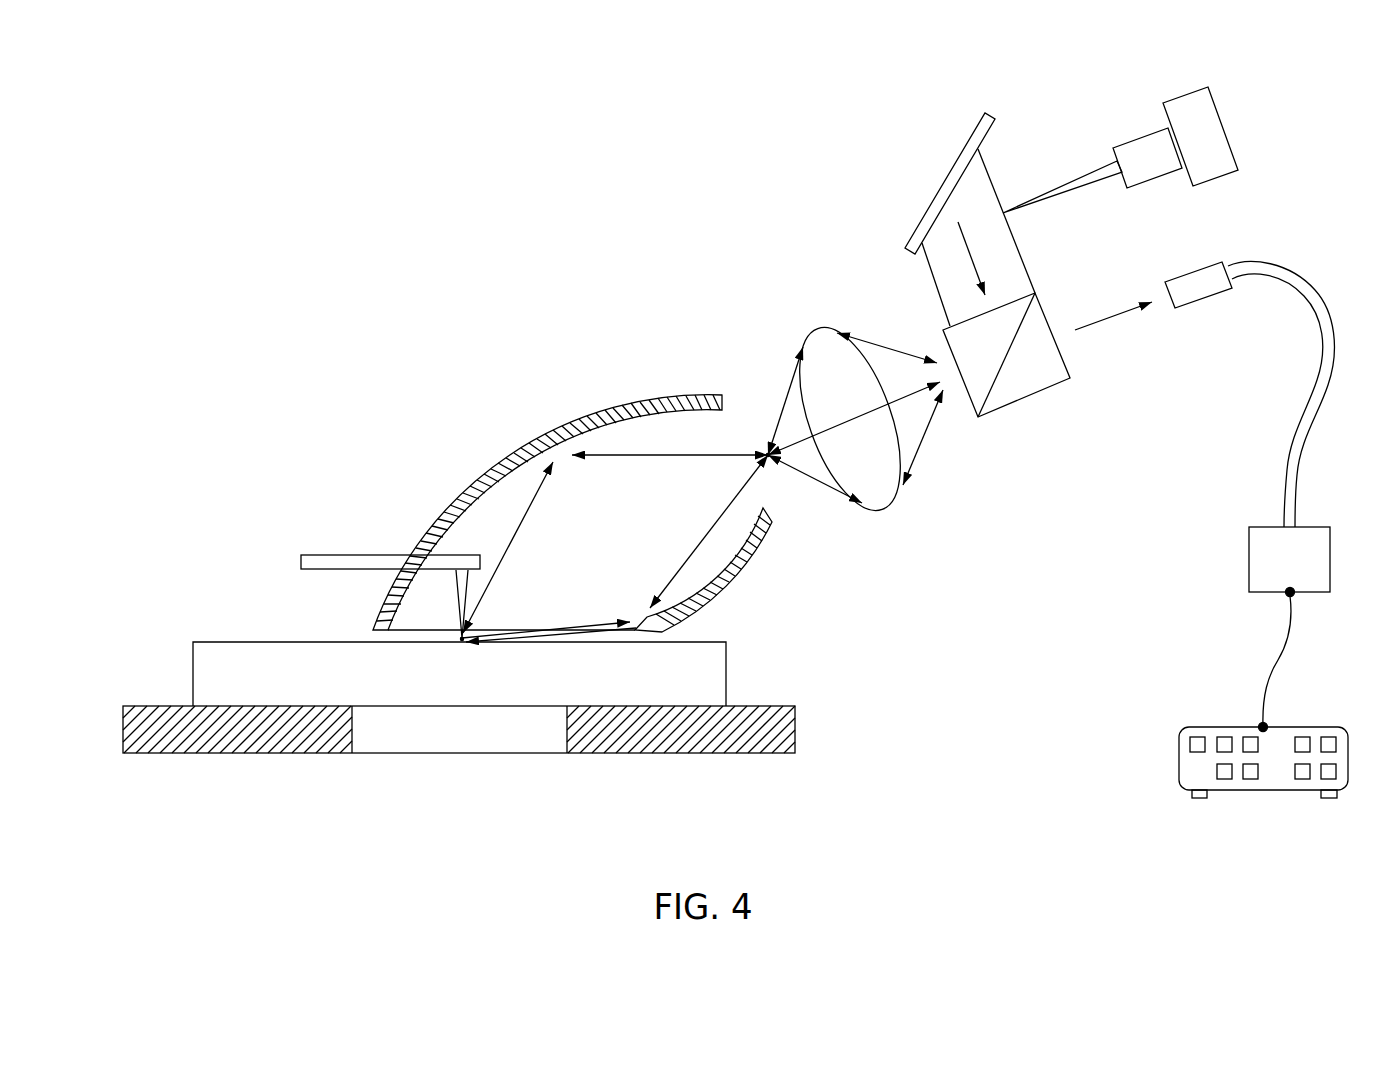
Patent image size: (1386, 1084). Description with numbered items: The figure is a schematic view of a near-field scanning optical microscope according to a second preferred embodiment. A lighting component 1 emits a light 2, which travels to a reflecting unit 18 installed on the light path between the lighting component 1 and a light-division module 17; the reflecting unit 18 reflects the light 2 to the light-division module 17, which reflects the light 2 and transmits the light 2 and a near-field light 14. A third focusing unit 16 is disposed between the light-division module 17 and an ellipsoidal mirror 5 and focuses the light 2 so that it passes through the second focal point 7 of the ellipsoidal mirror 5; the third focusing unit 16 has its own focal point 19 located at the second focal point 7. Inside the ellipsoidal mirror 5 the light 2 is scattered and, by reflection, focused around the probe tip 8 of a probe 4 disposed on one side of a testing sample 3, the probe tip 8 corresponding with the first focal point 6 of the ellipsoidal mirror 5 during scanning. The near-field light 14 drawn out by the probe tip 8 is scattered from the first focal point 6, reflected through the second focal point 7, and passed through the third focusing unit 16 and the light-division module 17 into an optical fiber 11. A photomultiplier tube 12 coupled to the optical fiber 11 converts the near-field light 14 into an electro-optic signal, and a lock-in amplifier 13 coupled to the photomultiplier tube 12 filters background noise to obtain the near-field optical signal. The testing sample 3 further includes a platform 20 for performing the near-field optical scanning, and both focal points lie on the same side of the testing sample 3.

The lighting component 1 is at (1217, 142).
The light 2 is at (1067, 187).
The testing sample 3 is at (673, 695).
The probe 4 is at (457, 580).
The ellipsoidal mirror 5 is at (652, 398).
The first focal point 6 is at (460, 642).
The probe tip 8 is at (460, 642).
The second focal point 7 is at (772, 457).
The focal point 19 is at (772, 457).
The optical fiber 11 is at (1203, 277).
The photomultiplier tube 12 is at (1312, 537).
The lock-in amplifier 13 is at (1190, 773).
The near-field light 14 is at (525, 515).
The third focusing unit 16 is at (892, 483).
The light-division module 17 is at (1038, 377).
The reflecting unit 18 is at (940, 198).
The platform 20 is at (780, 728).